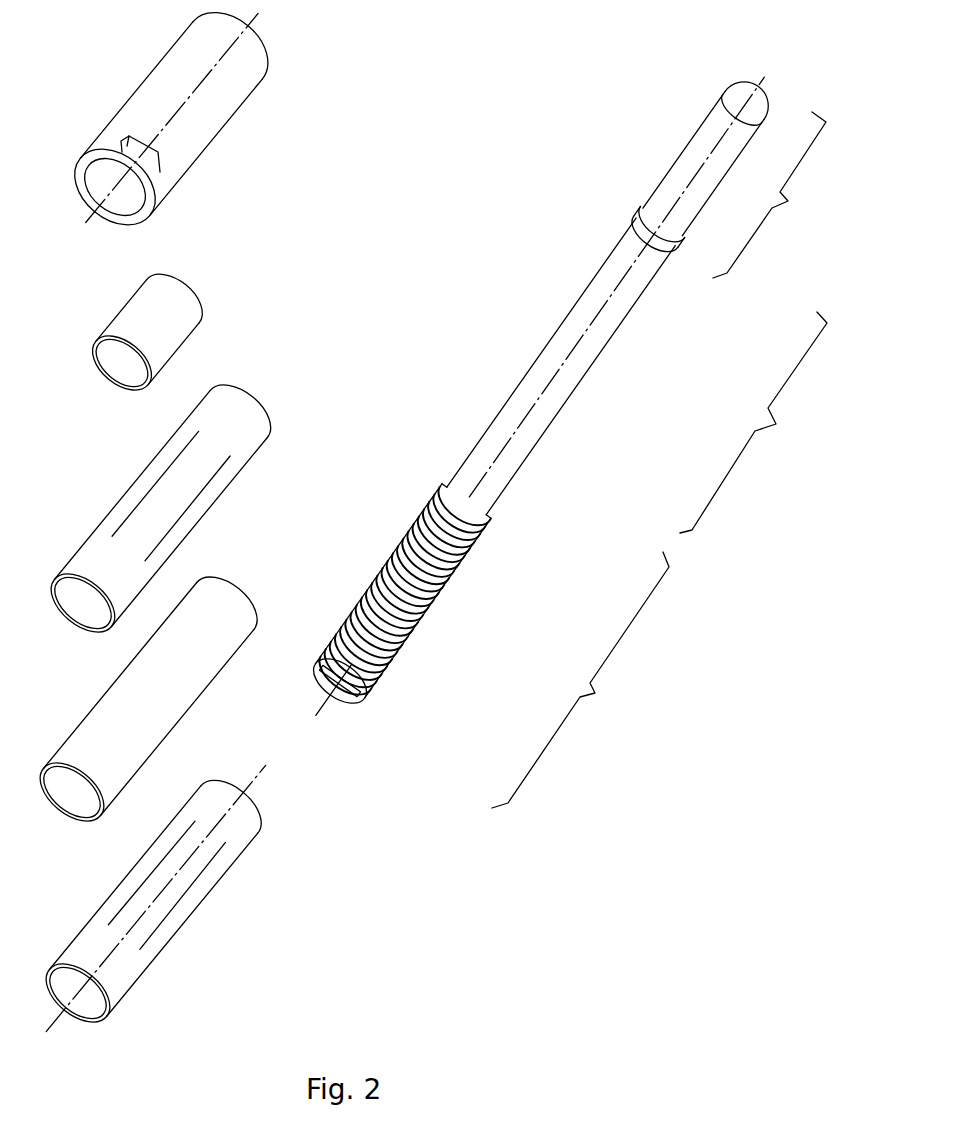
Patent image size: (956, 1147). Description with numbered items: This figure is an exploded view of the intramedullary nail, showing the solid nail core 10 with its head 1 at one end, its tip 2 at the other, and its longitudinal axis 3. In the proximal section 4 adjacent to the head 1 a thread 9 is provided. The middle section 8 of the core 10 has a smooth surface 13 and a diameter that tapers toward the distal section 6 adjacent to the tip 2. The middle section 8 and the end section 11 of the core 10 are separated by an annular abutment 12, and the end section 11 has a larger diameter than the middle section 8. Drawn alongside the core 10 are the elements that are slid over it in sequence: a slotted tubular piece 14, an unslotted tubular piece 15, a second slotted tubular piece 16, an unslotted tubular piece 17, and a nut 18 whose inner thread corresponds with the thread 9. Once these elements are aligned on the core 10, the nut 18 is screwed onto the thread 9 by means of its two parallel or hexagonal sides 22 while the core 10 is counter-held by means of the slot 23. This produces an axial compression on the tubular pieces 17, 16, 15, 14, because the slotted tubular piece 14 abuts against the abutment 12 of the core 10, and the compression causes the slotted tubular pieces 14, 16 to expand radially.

The head 1 is at (367, 702).
The tip 2 is at (732, 85).
The longitudinal axis 3 is at (53, 1023).
The proximal section 4 is at (630, 705).
The distal section 6 is at (808, 223).
The middle section 8 is at (800, 450).
The thread 9 is at (433, 607).
The solid nail core 10 is at (532, 443).
The end section 11 is at (698, 163).
The annular abutment 12 is at (678, 240).
The smooth surface 13 is at (542, 375).
The slotted tubular piece 14 is at (127, 972).
The unslotted tubular piece 15 is at (115, 720).
The slotted tubular piece 16 is at (95, 547).
The unslotted tubular piece 17 is at (147, 322).
The nut 18 is at (236, 78).
The hexagonal sides 22 is at (150, 173).
The slot 23 is at (343, 697).